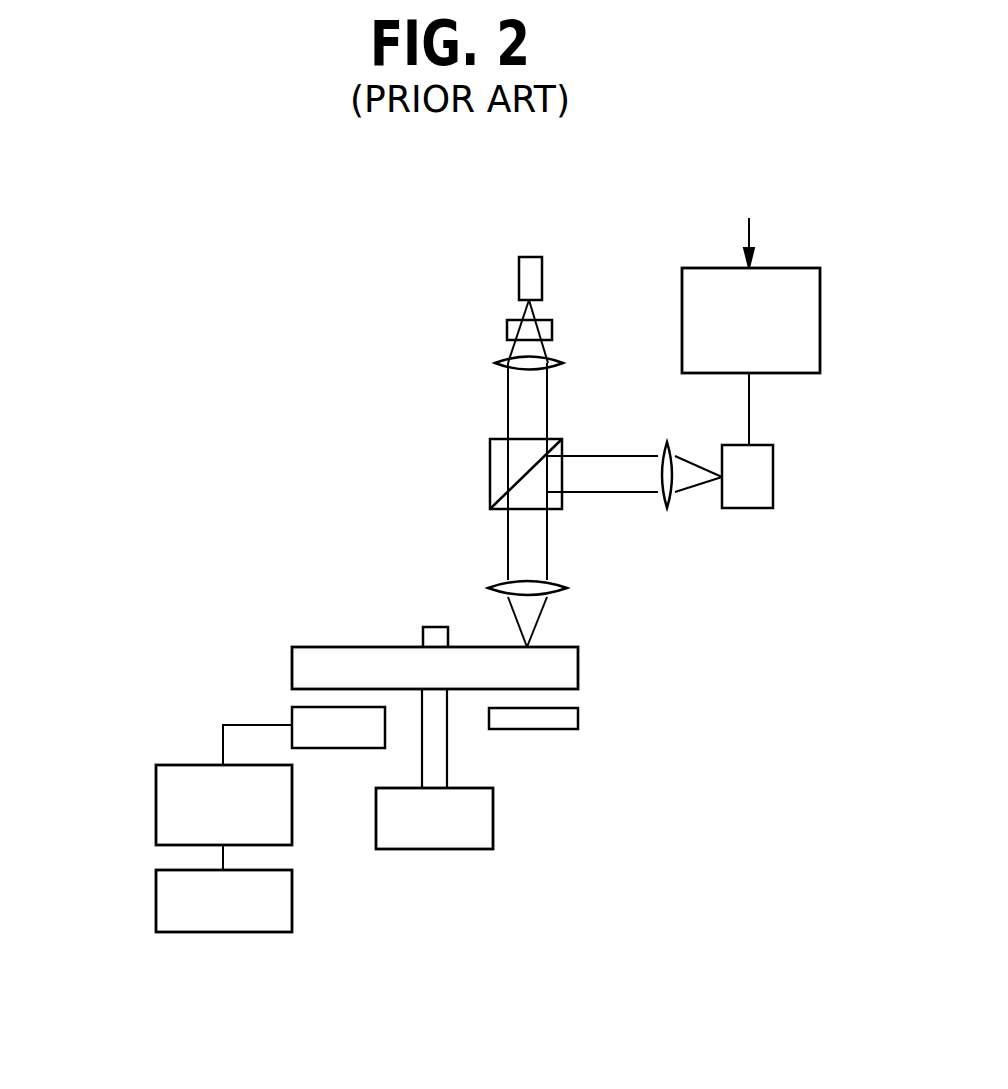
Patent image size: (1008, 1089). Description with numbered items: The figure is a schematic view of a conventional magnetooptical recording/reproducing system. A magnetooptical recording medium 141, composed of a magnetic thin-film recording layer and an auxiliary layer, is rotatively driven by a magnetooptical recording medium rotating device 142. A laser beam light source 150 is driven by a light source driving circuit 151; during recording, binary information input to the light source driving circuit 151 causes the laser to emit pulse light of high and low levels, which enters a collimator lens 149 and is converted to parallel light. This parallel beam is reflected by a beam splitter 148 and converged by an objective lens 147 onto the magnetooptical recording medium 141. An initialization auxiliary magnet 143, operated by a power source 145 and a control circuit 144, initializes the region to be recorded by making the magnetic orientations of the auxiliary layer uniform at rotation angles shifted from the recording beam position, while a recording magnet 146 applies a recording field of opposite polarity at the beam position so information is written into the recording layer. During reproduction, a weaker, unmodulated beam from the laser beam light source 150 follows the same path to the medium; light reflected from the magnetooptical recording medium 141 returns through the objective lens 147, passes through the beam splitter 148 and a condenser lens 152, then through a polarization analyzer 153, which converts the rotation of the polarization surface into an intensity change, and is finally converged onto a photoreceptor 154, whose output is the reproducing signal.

The magnetooptical recording medium 141 is at (578, 675).
The magnetooptical recording medium rotating device 142 is at (493, 820).
The initialization auxiliary magnet 143 is at (292, 712).
The control circuit 144 is at (156, 808).
The power source 145 is at (156, 897).
The recording magnet 146 is at (578, 718).
The objective lens 147 is at (562, 586).
The beam splitter 148 is at (490, 470).
The collimator lens 149 is at (668, 508).
The laser beam light source 150 is at (773, 470).
The light source driving circuit 151 is at (820, 322).
The condenser lens 152 is at (495, 363).
The polarization analyzer 153 is at (507, 330).
The photoreceptor 154 is at (519, 273).